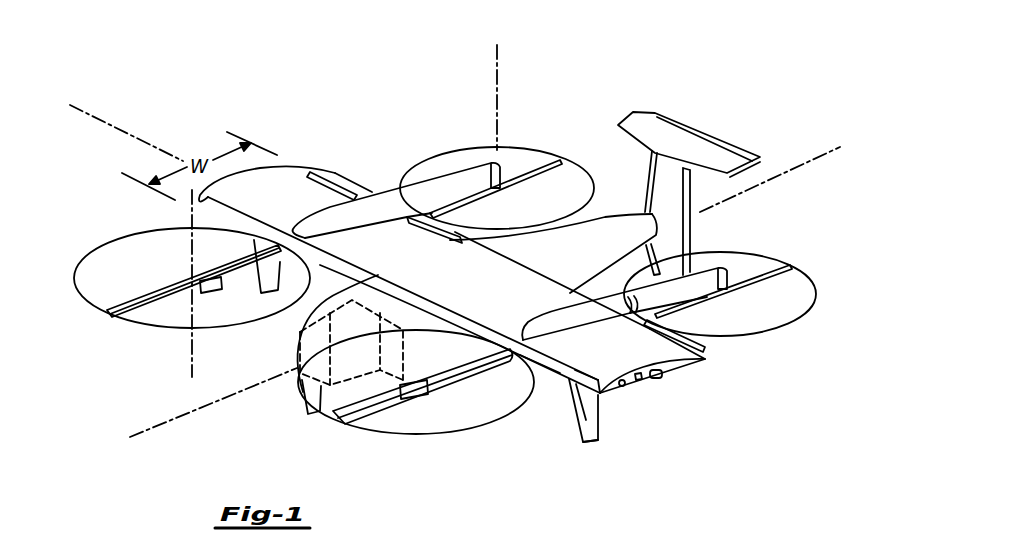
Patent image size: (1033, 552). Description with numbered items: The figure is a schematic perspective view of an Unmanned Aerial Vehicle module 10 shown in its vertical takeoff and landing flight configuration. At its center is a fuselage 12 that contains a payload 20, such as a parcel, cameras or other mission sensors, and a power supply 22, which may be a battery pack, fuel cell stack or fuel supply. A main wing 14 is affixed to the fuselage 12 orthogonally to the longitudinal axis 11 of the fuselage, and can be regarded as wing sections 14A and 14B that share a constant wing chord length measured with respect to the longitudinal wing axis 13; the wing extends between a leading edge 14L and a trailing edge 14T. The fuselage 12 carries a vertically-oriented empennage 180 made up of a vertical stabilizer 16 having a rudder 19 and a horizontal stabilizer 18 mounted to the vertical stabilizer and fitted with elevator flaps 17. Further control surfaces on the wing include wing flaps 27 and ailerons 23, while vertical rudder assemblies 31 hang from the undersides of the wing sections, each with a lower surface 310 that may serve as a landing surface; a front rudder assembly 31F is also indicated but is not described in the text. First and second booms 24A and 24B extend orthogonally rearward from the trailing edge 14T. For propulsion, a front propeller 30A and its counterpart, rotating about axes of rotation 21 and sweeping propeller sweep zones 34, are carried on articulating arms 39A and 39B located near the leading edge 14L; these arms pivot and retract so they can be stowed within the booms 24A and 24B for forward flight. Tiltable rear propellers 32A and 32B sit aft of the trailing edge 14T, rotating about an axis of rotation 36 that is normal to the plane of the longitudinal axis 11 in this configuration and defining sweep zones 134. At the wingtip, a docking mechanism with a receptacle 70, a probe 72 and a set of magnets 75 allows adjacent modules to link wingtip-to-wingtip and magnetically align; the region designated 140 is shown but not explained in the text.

The UAV module 10 is at (290, 102).
The longitudinal axis 11 is at (167, 422).
The fuselage 12 is at (589, 263).
The longitudinal wing axis 13 is at (88, 104).
The main wing 14 is at (435, 275).
The wing section 14A is at (300, 183).
The wing section 14B is at (570, 380).
The leading edge 14L is at (586, 352).
The trailing edge 14T is at (712, 350).
The vertical stabilizer 16 is at (648, 182).
The elevator flaps 17 is at (670, 122).
The horizontal stabilizer 18 is at (705, 147).
The rudder 19 is at (718, 209).
The payload 20 is at (360, 373).
The axes of rotation 21 is at (190, 240).
The power supply 22 is at (442, 358).
The ailerons 23 is at (340, 180).
The first boom 24A is at (425, 186).
The second boom 24B is at (703, 272).
The wing flaps 27 is at (465, 221).
The front propeller 30A is at (125, 318).
The vertical rudder assemblies 31 is at (268, 296).
The front landing gear leg 31F is at (305, 408).
The rear propeller 32A is at (540, 170).
The rear propeller 32B is at (787, 267).
The propeller sweep zones 34 is at (88, 258).
The axis of rotation 36 is at (490, 78).
The articulating arm 39A is at (215, 295).
The articulating arm 39B is at (447, 390).
The receptacle 70 is at (626, 388).
The probe 72 is at (661, 377).
The set of magnets 75 is at (639, 380).
The sweep zones 134 is at (560, 150).
The sensor system 140 is at (698, 452).
The empennage 180 is at (782, 121).
The lower surface 310 is at (595, 433).